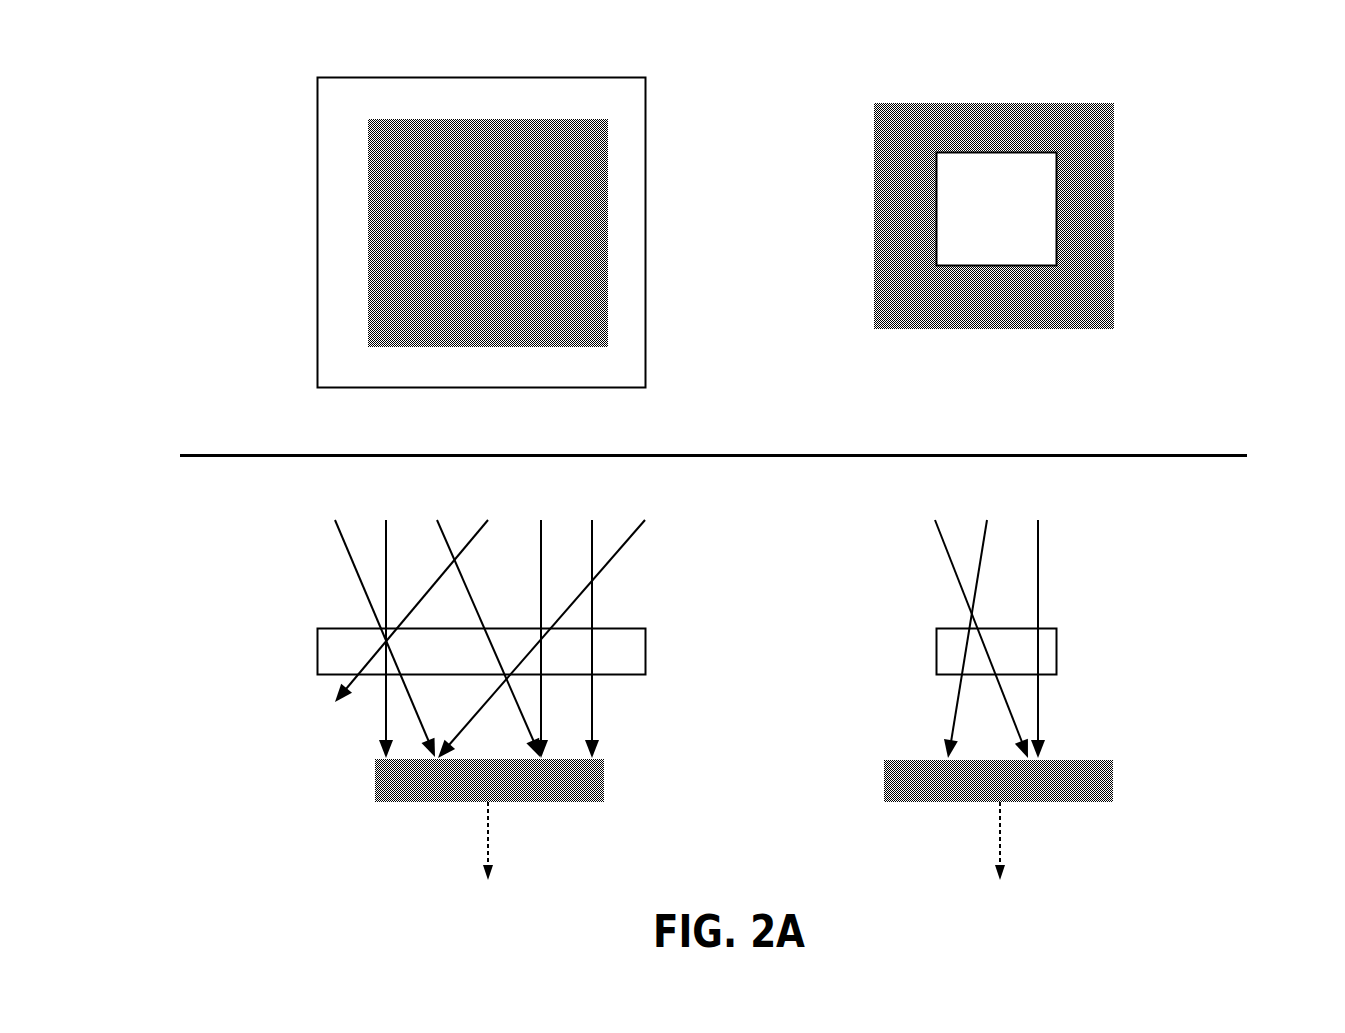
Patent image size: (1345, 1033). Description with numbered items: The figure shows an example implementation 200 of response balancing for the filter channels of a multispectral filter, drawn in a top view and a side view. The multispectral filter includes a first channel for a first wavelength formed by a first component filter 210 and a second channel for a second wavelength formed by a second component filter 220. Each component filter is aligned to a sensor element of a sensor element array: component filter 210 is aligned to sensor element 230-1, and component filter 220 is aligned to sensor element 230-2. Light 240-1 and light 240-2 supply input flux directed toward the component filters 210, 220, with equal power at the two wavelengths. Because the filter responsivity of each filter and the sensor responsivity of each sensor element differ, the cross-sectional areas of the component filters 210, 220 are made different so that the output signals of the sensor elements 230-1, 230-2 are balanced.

The example implementation 200 is at (224, 48).
The first component filter 210 is at (318, 179).
The second component filter 220 is at (936, 213).
The sensor element 230-1 is at (368, 297).
The sensor element 230-2 is at (880, 300).
The light 240-1 is at (312, 538).
The light 240-2 is at (1057, 542).